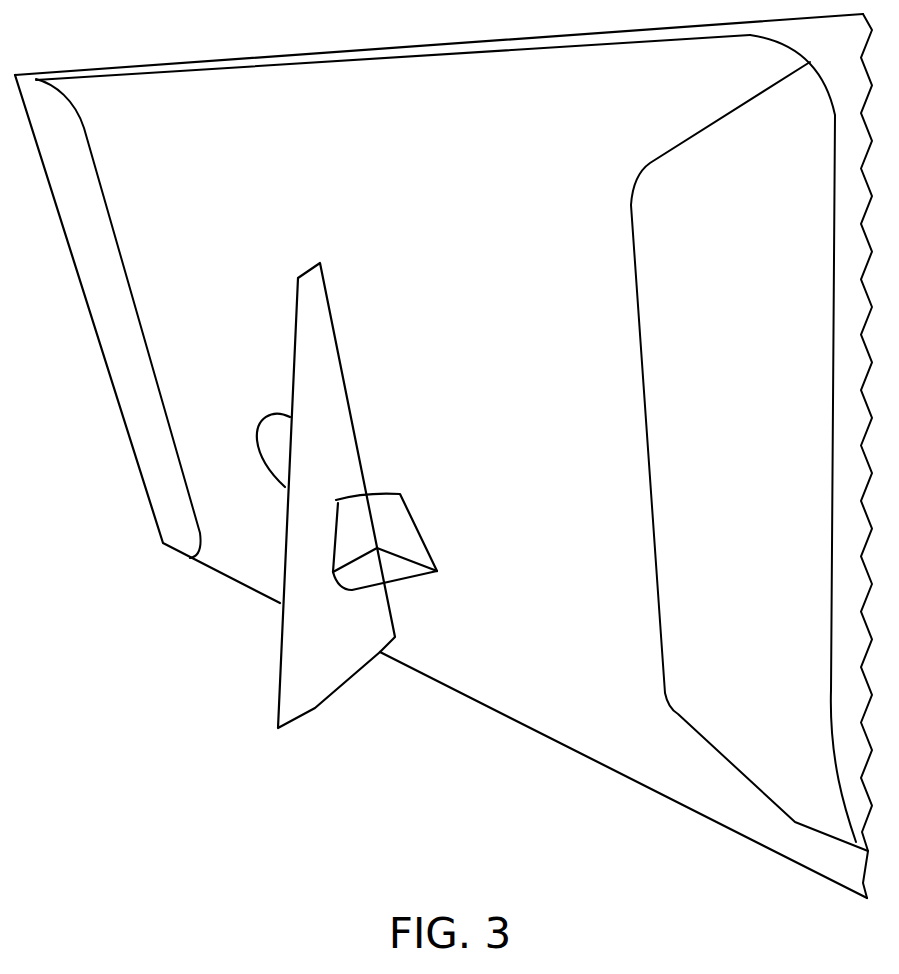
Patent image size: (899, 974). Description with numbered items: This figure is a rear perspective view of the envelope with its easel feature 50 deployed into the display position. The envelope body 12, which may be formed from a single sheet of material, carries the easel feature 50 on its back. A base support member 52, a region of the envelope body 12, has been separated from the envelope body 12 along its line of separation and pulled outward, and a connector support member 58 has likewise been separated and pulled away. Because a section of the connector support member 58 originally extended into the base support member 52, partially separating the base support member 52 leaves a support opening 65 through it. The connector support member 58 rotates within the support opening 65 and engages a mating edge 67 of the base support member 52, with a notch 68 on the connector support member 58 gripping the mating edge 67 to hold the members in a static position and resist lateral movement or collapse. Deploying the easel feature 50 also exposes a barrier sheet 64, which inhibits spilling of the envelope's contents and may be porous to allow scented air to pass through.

The envelope body 12 is at (443, 456).
The easel feature 50 is at (357, 481).
The base support member 52 is at (333, 392).
The connector support member 58 is at (404, 566).
The barrier sheet 64 is at (268, 424).
The support opening 65 is at (394, 555).
The mating edge 67 is at (337, 528).
The notch 68 is at (333, 582).